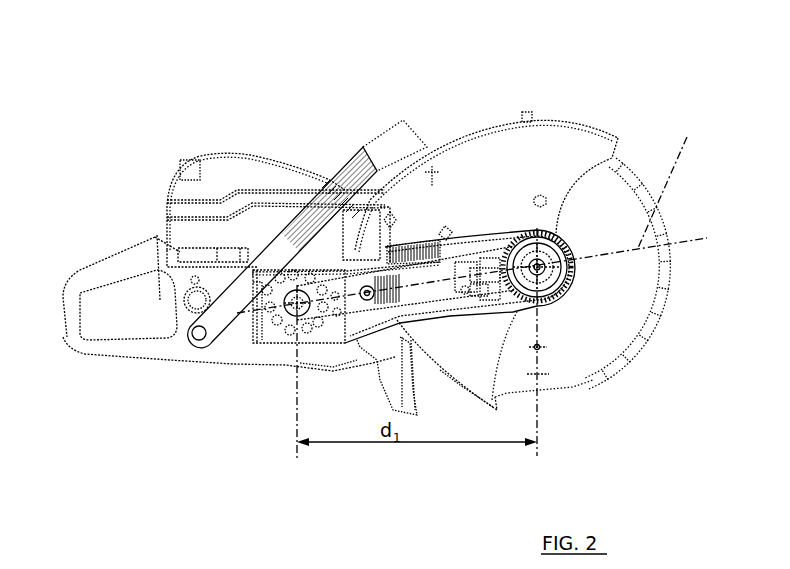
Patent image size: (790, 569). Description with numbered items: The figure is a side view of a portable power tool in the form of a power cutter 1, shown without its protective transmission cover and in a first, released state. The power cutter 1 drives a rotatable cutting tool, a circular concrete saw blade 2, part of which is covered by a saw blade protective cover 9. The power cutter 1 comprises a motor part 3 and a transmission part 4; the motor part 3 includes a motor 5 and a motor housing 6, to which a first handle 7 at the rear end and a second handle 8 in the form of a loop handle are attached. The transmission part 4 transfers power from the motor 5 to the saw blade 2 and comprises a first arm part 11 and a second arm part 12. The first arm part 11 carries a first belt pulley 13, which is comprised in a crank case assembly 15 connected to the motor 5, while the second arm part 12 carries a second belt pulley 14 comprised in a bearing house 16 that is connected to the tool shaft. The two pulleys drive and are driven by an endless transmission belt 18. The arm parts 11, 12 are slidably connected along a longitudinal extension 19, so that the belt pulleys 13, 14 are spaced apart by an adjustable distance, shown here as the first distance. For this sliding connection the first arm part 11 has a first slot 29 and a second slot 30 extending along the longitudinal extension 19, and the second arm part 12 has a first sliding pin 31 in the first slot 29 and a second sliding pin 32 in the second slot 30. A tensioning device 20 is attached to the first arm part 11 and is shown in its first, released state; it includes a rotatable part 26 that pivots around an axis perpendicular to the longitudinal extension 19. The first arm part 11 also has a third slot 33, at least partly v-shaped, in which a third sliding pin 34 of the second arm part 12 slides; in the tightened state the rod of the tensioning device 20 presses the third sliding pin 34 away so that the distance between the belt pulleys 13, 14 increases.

The power cutter 1 is at (142, 55).
The saw blade 2 is at (598, 215).
The motor part 3 is at (207, 167).
The transmission part 4 is at (506, 215).
The motor 5 is at (330, 213).
The motor housing 6 is at (200, 230).
The first handle 7 is at (133, 270).
The second handle 8 is at (360, 173).
The saw blade protective cover 9 is at (578, 160).
The first arm part 11 is at (388, 240).
The second arm part 12 is at (530, 233).
The first belt pulley 13 is at (287, 330).
The second belt pulley 14 is at (548, 302).
The crank case assembly 15 is at (256, 332).
The bearing house 16 is at (573, 305).
The endless transmission belt 18 is at (430, 256).
The longitudinal extension 19 is at (478, 215).
The tensioning device 20 is at (388, 304).
The rotatable part 26 is at (367, 300).
The first slot 29 is at (493, 230).
The second slot 30 is at (498, 293).
The first sliding pin 31 is at (473, 240).
The second sliding pin 32 is at (488, 292).
The third slot 33 is at (455, 242).
The third sliding pin 34 is at (473, 293).